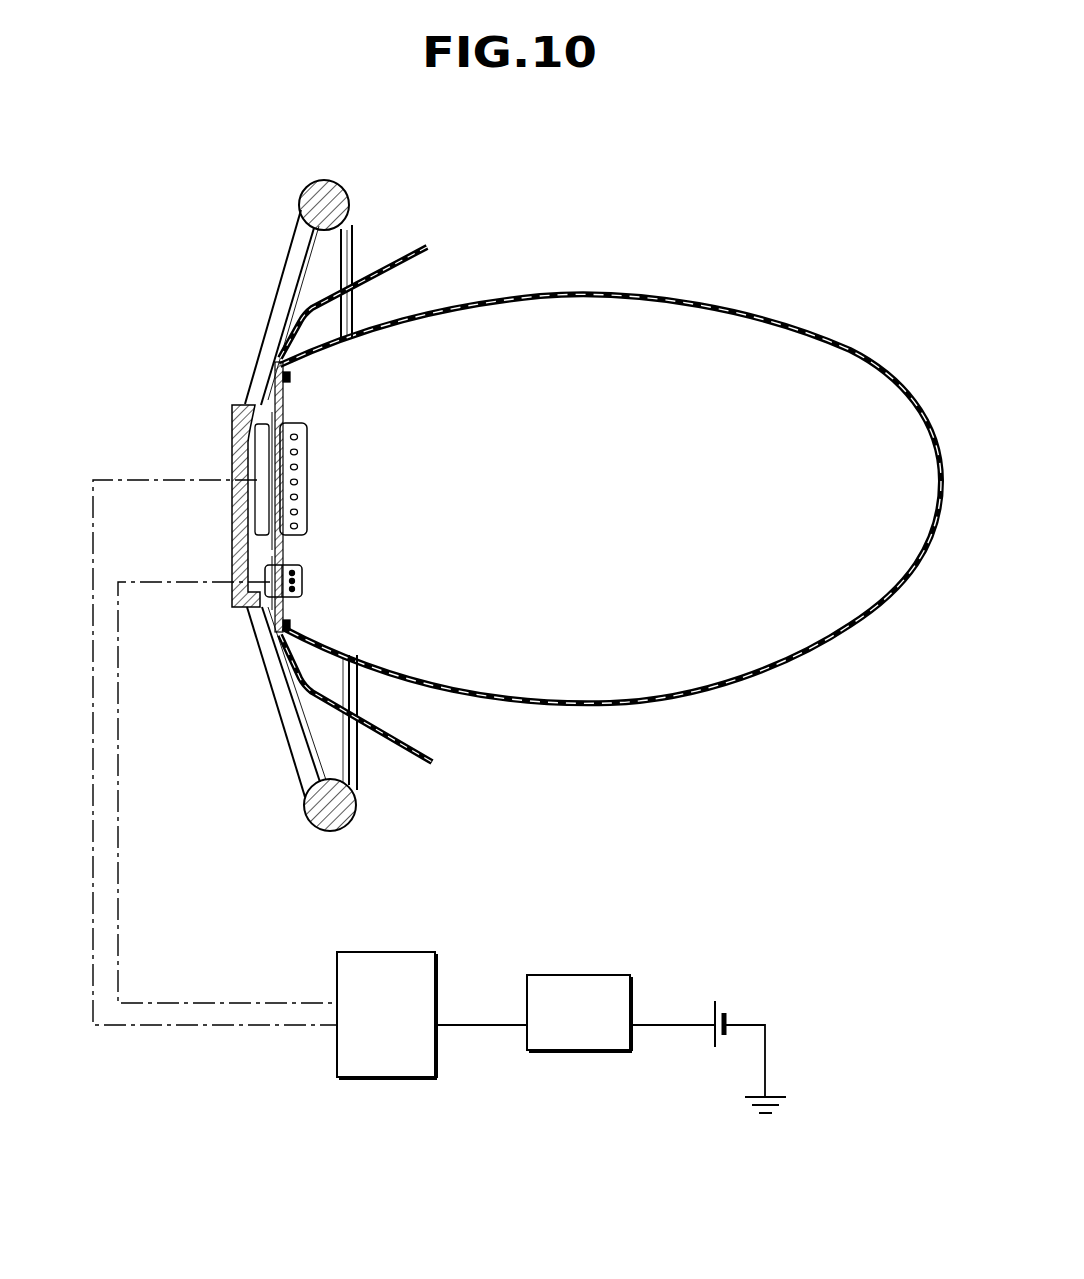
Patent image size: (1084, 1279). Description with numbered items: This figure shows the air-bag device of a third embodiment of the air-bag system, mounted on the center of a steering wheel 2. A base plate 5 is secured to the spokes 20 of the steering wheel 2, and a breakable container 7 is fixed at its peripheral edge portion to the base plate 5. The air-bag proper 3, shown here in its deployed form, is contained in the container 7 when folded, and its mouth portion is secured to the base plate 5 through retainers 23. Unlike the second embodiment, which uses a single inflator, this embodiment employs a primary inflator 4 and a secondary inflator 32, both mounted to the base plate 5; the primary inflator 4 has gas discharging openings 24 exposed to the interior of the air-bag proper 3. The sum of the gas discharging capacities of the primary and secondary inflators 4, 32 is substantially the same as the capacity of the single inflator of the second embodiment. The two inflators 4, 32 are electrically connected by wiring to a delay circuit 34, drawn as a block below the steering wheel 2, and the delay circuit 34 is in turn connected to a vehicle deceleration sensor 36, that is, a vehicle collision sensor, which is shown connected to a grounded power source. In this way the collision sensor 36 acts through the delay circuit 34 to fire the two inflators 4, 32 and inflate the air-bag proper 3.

The steering wheel 2 is at (350, 229).
The air-bag proper 3 is at (546, 290).
The primary inflator 4 is at (262, 500).
The base plate 5 is at (281, 617).
The breakable container 7 is at (409, 250).
The spokes 20 is at (286, 251).
The retainers 23 is at (291, 377).
The gas discharging openings 24 is at (303, 490).
The secondary inflator 32 is at (270, 587).
The delay circuit 34 is at (412, 952).
The vehicle deceleration sensor 36 is at (590, 975).